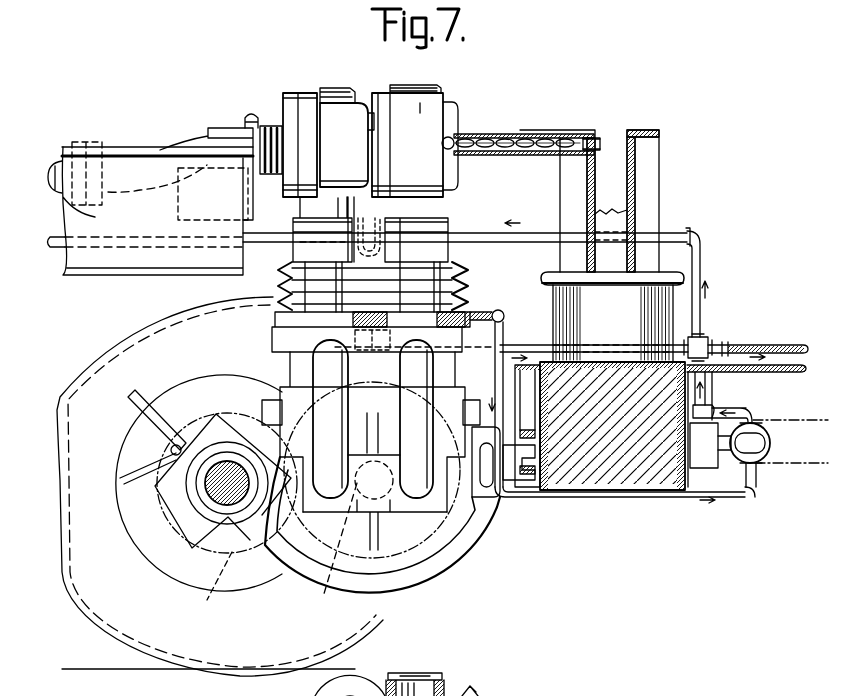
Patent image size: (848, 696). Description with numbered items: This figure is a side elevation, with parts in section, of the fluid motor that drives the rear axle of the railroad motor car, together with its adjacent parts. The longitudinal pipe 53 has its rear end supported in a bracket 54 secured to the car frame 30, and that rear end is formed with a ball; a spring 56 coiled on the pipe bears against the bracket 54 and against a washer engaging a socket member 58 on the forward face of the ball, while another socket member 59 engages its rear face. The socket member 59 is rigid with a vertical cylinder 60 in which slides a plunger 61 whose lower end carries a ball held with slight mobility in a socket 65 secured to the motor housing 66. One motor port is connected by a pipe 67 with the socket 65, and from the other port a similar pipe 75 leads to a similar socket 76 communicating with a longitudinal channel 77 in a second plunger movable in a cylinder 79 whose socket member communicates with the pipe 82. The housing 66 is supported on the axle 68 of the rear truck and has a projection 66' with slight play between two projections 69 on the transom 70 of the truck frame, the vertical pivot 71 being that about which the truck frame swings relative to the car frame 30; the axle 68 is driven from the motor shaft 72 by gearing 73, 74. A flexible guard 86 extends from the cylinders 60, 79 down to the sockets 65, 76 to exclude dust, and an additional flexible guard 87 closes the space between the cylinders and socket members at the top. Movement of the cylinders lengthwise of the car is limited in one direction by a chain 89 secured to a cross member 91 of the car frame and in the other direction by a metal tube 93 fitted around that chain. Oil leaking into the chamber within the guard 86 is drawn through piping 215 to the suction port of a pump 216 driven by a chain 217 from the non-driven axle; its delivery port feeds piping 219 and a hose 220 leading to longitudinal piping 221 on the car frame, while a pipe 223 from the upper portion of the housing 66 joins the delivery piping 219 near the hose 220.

The car frame 30 is at (151, 208).
The longitudinal pipe 53 is at (137, 183).
The bracket 54 is at (227, 129).
The spring 56 is at (267, 125).
The socket member 58 is at (292, 97).
The socket member 59 is at (347, 137).
The vertical cylinder 60 is at (323, 229).
The plunger 61 is at (278, 284).
The socket 65 is at (276, 337).
The motor housing 66 is at (382, 487).
The projection 66' is at (520, 486).
The pipe 67 is at (330, 419).
The axle 68 is at (205, 487).
The projections 69 is at (524, 432).
The transom 70 is at (632, 472).
The vertical pivot 71 is at (612, 218).
The motor shaft 72 is at (360, 520).
The gearing 73 is at (220, 486).
The gearing 74 is at (337, 550).
The pipe 75 is at (416, 419).
The socket 76 is at (455, 374).
The longitudinal channel 77 is at (415, 291).
The cylinder 79 is at (415, 141).
The pipe 82 is at (500, 695).
The flexible guard 86 is at (468, 269).
The flexible guard 87 is at (375, 216).
The chain 89 is at (540, 134).
The cross member 91 is at (573, 201).
The metal tube 93 is at (496, 133).
The piping 215 is at (756, 476).
The pump 216 is at (762, 443).
The chain 217 is at (800, 412).
The piping 219 is at (712, 393).
The hose 220 is at (790, 336).
The longitudinal piping 221 is at (692, 231).
The pipe 223 is at (545, 342).